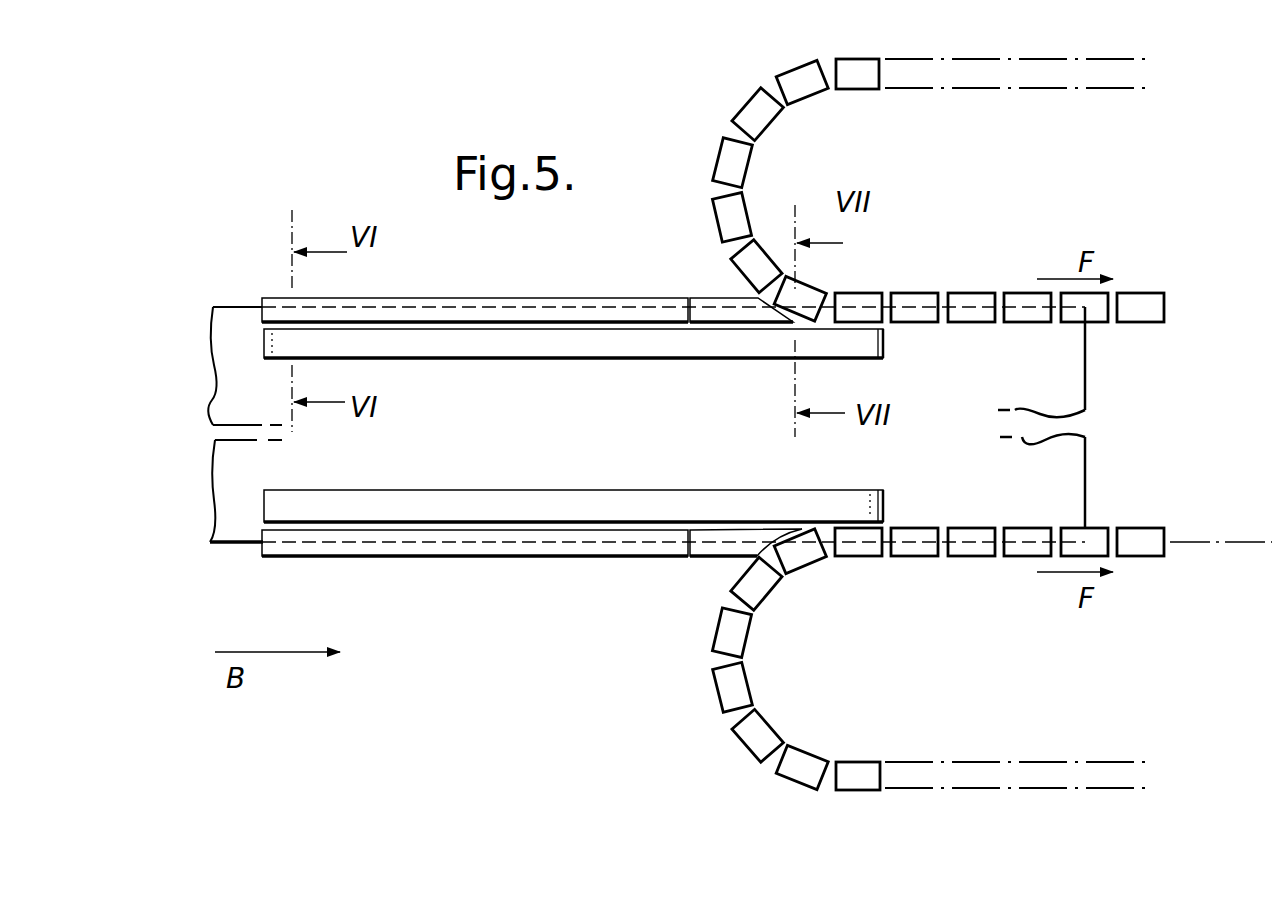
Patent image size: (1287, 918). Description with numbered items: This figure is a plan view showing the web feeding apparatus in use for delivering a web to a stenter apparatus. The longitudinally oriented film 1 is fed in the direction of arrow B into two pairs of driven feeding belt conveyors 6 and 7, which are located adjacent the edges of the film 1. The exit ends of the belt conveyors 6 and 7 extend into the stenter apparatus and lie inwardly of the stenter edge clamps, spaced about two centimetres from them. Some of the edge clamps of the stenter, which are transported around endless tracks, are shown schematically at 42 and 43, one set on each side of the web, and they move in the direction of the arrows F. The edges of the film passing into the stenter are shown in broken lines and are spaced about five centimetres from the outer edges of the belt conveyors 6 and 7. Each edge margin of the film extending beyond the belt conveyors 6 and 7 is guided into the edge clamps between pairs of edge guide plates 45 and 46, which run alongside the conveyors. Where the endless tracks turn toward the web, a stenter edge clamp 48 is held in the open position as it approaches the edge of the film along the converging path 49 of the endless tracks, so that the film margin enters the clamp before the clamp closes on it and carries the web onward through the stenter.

The longitudinally oriented film 1 is at (245, 527).
The feeding belt conveyor 6 is at (437, 338).
The feeding belt conveyor 7 is at (582, 512).
The stenter edge clamps 42 is at (740, 152).
The stenter edge clamps 43 is at (740, 638).
The edge guide plate 45 is at (545, 298).
The edge guide plate 46 is at (705, 297).
The stenter edge clamp 48 is at (815, 290).
The converging path 49 is at (803, 267).